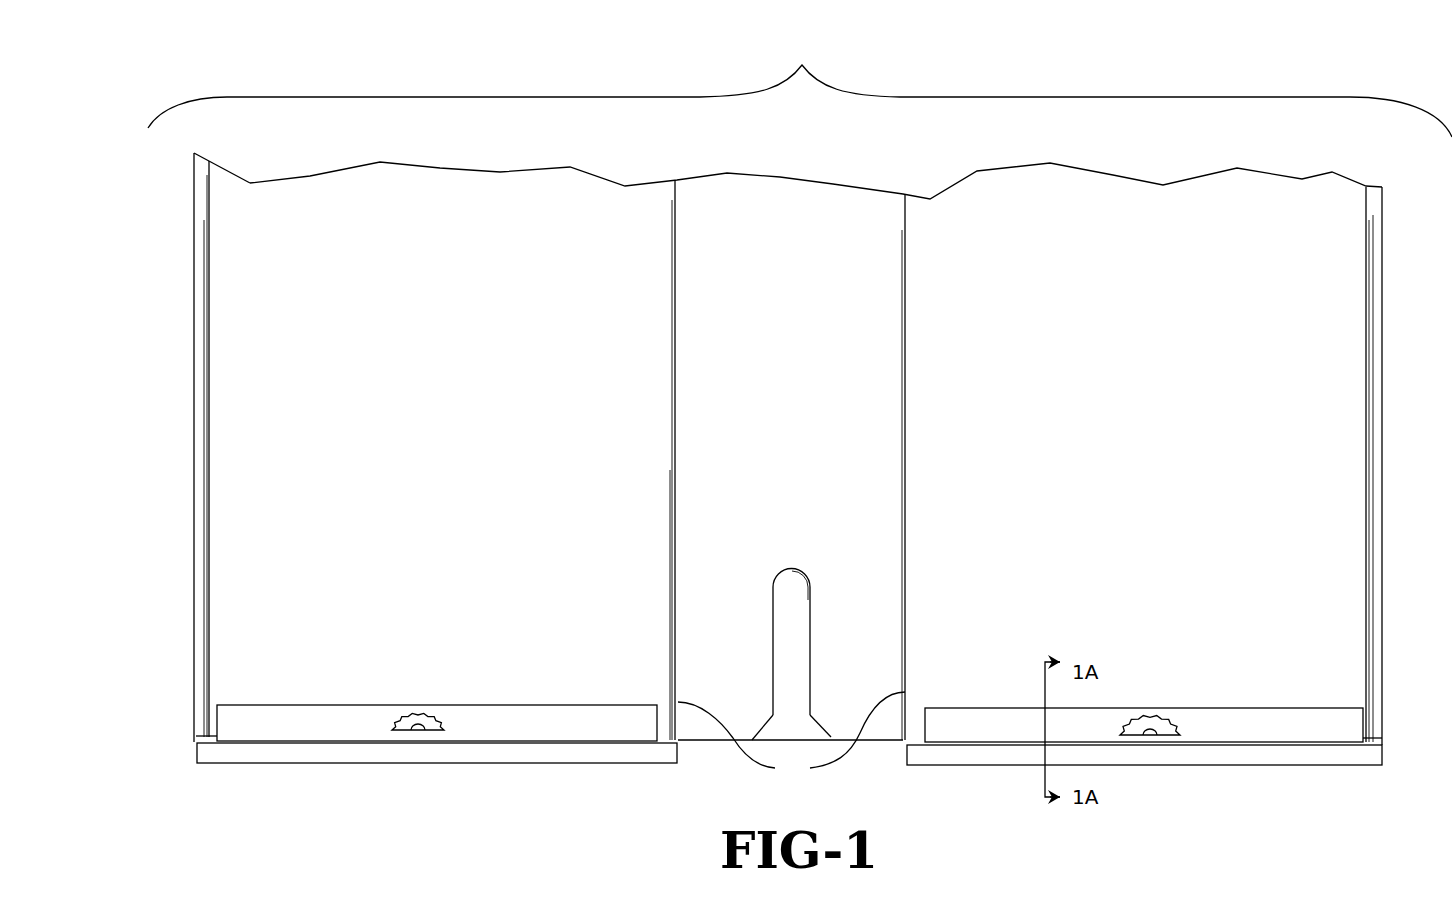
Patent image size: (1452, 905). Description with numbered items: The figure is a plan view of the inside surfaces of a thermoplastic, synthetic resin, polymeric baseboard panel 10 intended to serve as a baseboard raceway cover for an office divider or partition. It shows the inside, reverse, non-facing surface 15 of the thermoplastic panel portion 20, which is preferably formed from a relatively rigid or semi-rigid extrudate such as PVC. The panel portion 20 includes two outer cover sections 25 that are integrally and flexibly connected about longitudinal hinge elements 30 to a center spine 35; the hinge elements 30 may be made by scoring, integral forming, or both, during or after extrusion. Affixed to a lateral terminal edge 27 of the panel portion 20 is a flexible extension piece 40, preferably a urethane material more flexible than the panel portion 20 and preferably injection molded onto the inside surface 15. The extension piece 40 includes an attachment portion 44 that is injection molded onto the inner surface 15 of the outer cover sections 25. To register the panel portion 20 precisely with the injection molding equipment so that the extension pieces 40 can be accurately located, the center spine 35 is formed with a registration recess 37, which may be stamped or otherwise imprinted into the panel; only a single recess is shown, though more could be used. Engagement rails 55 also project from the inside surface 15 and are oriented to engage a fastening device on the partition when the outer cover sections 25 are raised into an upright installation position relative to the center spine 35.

The baseboard panel 10 is at (670, 55).
The inside surface 15 is at (443, 434).
The panel portion 20 is at (800, 84).
The outer cover sections 25 is at (440, 163).
The lateral terminal edge 27 is at (207, 728).
The hinge elements 30 is at (791, 676).
The center spine 35 is at (848, 183).
The registration recess 37 is at (790, 715).
The extension piece 40 is at (190, 746).
The attachment portion 44 is at (581, 704).
The engagement rails 55 is at (195, 393).